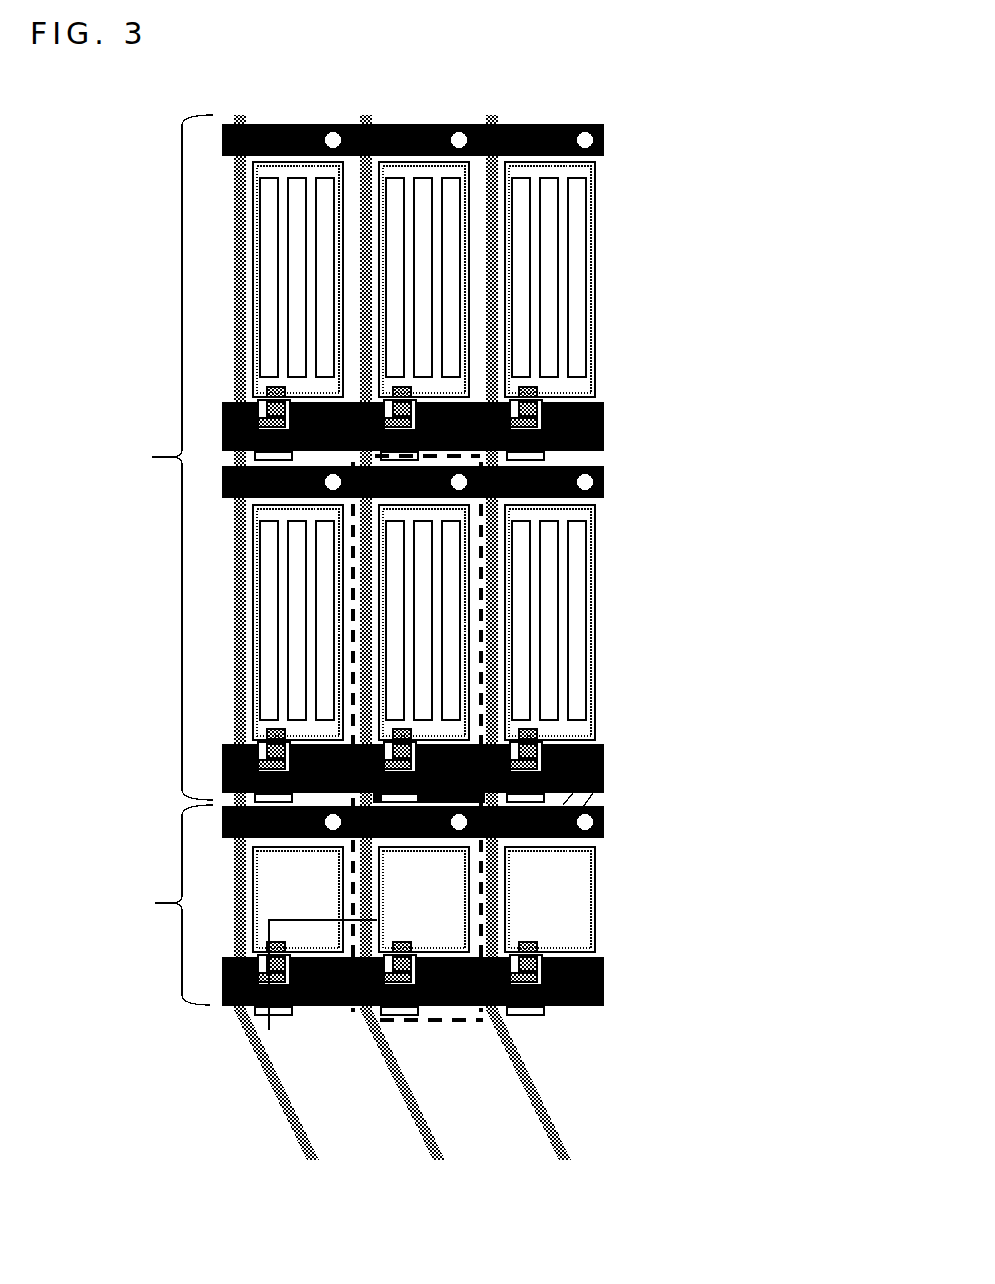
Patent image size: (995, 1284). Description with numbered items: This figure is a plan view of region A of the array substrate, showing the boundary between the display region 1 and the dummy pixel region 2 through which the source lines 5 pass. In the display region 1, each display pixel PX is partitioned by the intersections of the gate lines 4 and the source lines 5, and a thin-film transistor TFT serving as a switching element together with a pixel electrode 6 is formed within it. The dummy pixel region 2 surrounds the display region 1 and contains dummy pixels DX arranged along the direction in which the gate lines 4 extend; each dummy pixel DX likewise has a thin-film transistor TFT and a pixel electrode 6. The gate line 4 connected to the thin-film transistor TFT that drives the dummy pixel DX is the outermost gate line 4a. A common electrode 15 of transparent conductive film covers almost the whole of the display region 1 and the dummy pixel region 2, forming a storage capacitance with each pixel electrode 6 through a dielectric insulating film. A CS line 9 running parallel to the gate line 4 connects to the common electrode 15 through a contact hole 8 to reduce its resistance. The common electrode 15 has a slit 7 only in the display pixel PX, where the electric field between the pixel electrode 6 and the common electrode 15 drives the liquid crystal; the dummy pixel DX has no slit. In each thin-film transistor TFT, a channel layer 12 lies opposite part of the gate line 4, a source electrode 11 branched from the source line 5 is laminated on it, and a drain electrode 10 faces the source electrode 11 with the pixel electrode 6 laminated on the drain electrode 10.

The display region 1 is at (164, 457).
The dummy pixel region 2 is at (169, 905).
The gate line 4 is at (594, 697).
The outermost gate line 4a is at (603, 1005).
The source line 5 is at (234, 714).
The pixel electrode 6 is at (604, 746).
The slit 7 is at (582, 547).
The contact hole 8 is at (603, 476).
The CS line 9 is at (602, 455).
The drain electrode 10 is at (603, 772).
The source electrode 11 is at (583, 838).
The channel layer 12 is at (595, 840).
The common electrode 15 is at (604, 281).
The display pixel PX is at (585, 575).
The thin-film transistor TFT is at (603, 772).
The dummy pixel DX is at (458, 1023).
The region A is at (334, 982).